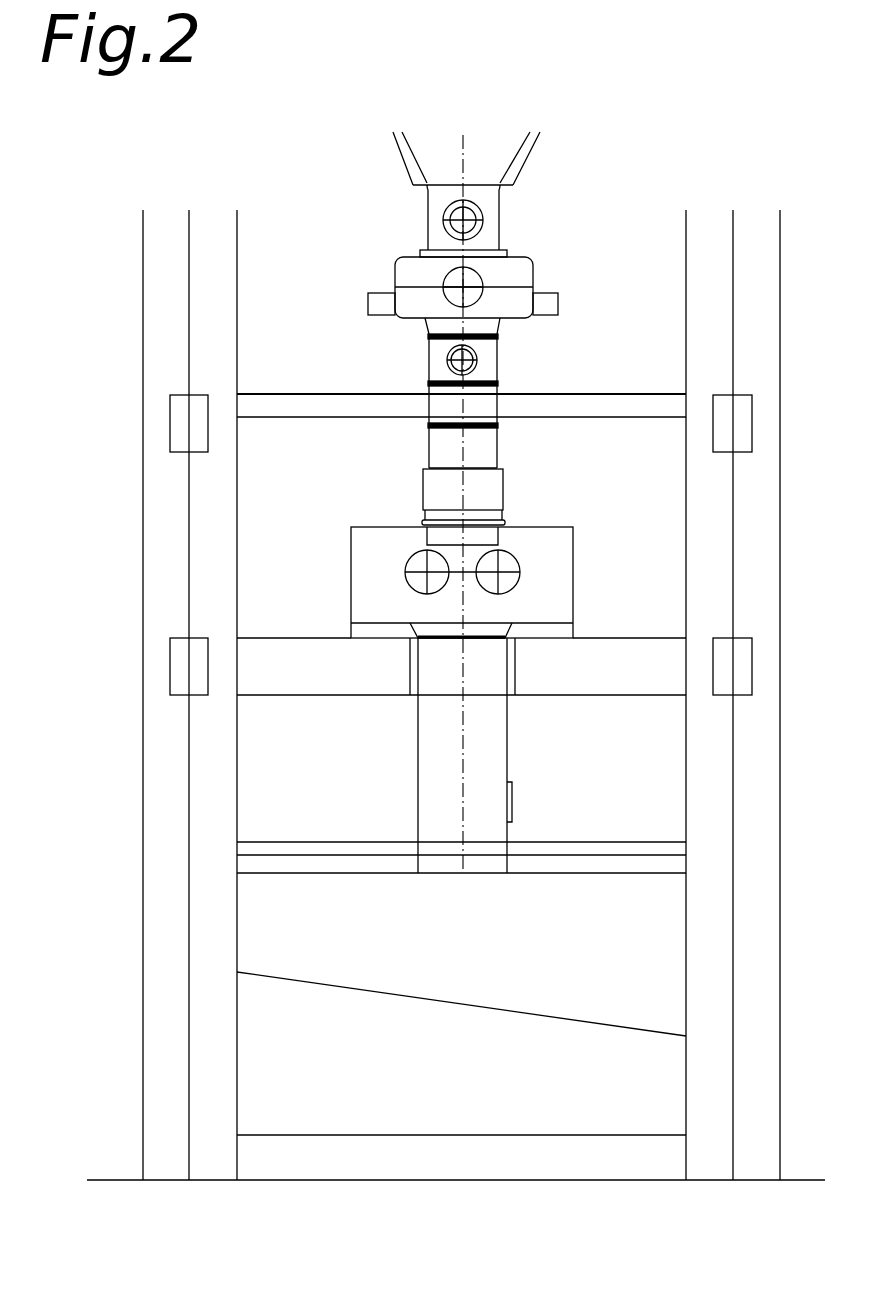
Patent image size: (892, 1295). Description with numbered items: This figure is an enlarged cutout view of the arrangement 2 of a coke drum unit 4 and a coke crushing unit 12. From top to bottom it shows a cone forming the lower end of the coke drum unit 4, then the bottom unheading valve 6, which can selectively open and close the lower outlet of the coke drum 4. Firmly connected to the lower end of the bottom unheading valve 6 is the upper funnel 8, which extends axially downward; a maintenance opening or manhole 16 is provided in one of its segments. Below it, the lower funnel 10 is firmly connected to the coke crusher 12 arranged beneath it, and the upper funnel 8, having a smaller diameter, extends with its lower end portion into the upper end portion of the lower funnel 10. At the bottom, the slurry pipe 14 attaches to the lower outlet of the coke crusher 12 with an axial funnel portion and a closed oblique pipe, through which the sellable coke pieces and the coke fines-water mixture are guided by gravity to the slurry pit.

The arrangement 2 is at (158, 125).
The coke drum unit 4 is at (393, 135).
The bottom unheading valve 6 is at (398, 270).
The upper funnel 8 is at (430, 369).
The funnel 10 is at (421, 501).
The coke crusher 12 is at (352, 578).
The slurry pipe 14 is at (428, 915).
The maintenance opening/manhole 16 is at (470, 358).